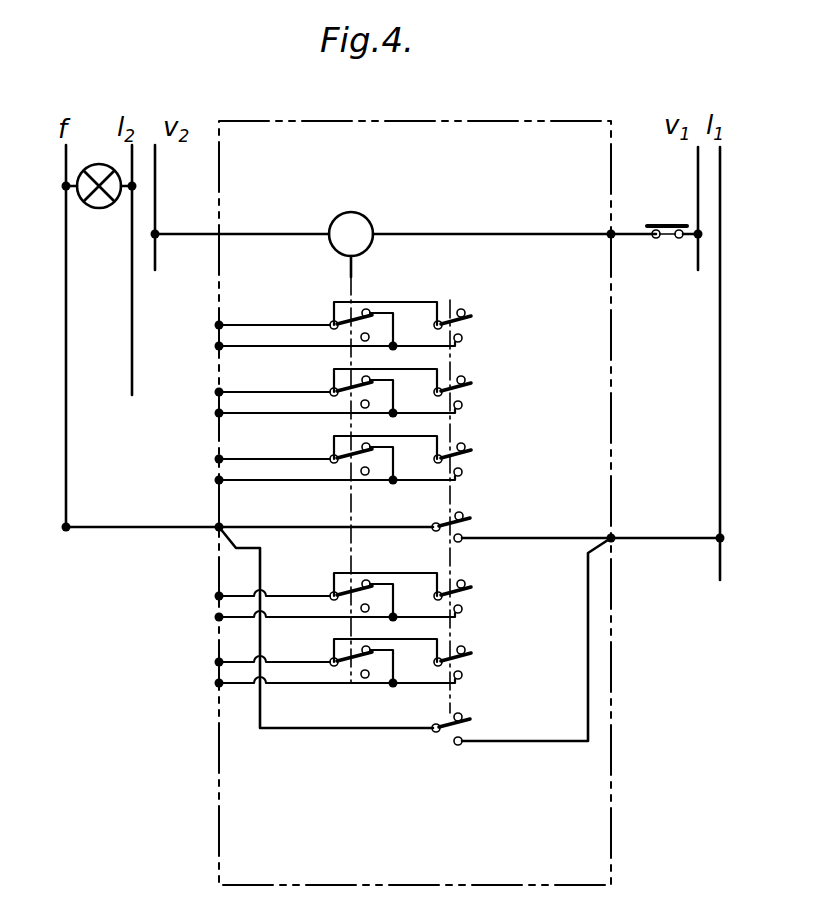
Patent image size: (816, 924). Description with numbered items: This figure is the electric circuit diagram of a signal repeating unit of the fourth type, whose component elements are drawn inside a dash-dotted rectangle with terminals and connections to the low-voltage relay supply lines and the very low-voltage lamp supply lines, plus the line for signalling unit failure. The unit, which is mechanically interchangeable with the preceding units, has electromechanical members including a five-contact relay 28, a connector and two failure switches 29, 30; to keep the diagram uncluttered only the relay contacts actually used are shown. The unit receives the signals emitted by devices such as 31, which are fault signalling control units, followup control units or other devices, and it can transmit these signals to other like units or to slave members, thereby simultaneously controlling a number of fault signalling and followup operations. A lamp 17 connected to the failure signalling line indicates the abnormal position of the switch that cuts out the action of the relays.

The lamp 17 is at (103, 209).
The five-contact relay 28 is at (366, 216).
The failure switch 29 is at (467, 397).
The failure switch 30 is at (450, 705).
The signal-emitting device 31 is at (675, 221).